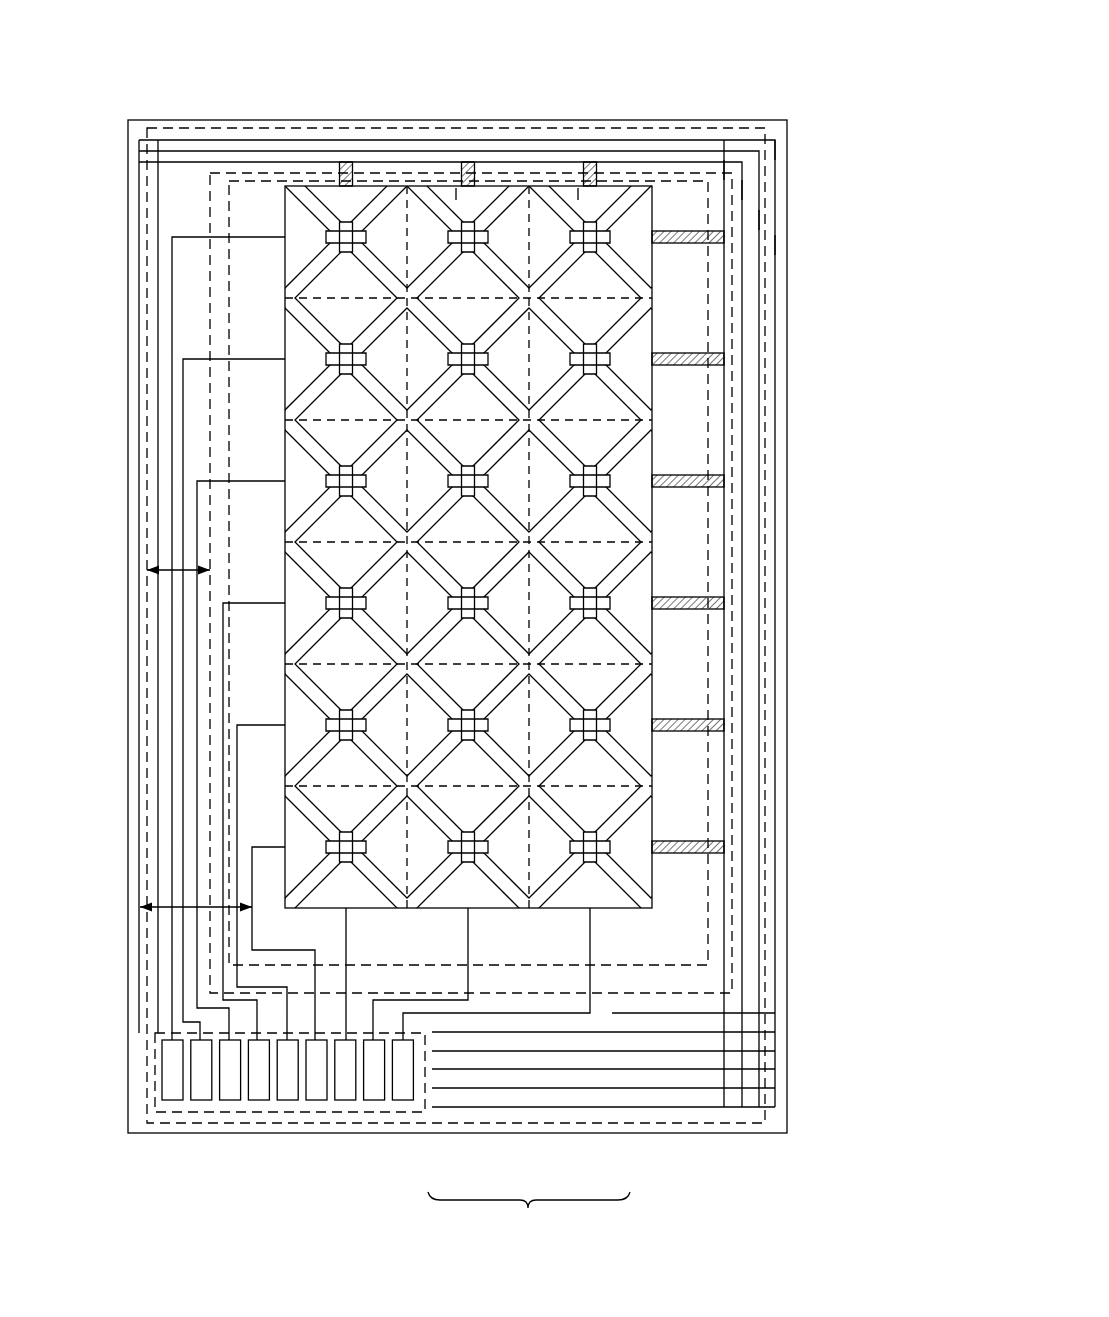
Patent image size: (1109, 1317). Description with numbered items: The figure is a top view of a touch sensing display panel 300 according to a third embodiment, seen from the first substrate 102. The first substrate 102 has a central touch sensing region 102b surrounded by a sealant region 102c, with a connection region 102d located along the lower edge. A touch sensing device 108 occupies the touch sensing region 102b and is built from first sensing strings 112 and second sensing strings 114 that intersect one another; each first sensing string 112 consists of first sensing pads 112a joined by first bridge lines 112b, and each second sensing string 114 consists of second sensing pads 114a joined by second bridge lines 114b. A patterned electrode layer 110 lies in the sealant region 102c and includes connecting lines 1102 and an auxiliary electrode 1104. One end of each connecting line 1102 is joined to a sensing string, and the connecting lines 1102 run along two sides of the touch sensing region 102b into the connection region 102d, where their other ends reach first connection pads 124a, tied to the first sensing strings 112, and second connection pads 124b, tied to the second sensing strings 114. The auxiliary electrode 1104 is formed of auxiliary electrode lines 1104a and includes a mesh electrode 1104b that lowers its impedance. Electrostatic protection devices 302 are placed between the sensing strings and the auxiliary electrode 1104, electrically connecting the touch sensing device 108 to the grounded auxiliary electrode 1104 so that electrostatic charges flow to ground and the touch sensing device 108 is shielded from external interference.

The touch sensing display panel 300 is at (748, 88).
The first substrate 102 is at (690, 120).
The touch sensing region 102b is at (709, 523).
The sealant region 102c is at (765, 973).
The connection region 102d is at (157, 1082).
The touch sensing device 108 is at (622, 188).
The patterned electrode layer 110 is at (529, 1218).
The first sensing strings 112 is at (468, 500).
The first sensing pads 112a is at (468, 565).
The first bridge lines 112b is at (492, 128).
The second sensing strings 114 is at (465, 513).
The second sensing pads 114a is at (468, 542).
The second bridge lines 114b is at (575, 192).
The connecting lines 1102 is at (533, 1160).
The auxiliary electrode 1104 is at (592, 1160).
The auxiliary electrode lines 1104a is at (775, 243).
The mesh electrode 1104b is at (777, 150).
The first connection pads 124a is at (313, 1178).
The second connection pads 124b is at (406, 1150).
The electrostatic protection devices 302 is at (724, 848).